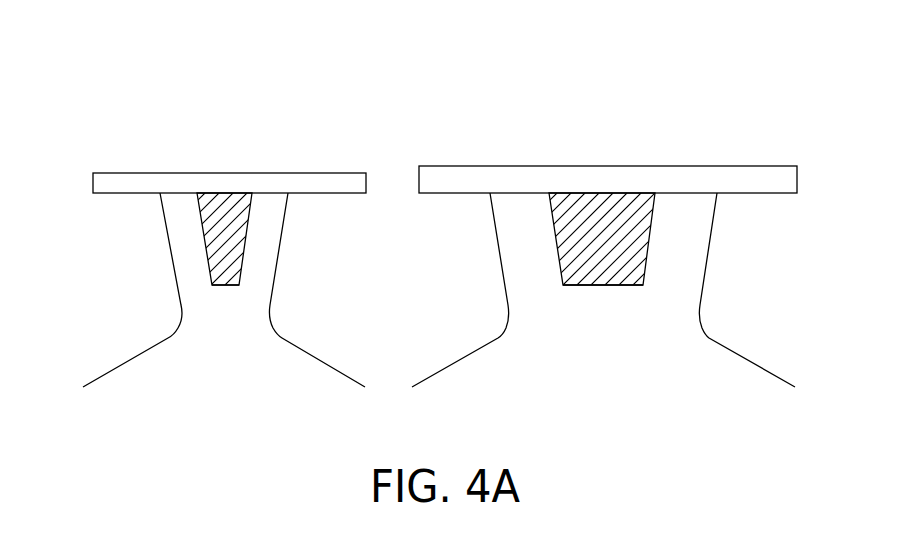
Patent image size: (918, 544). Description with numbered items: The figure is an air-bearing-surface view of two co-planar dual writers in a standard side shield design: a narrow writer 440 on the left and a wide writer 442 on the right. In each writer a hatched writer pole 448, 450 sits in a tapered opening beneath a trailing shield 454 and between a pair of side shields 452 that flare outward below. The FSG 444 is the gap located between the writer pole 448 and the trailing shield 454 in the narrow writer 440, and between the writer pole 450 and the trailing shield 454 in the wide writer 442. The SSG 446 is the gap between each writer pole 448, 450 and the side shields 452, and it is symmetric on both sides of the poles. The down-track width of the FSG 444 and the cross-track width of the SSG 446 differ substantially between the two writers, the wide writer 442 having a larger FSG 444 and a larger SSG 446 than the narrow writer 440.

The narrow writer 440 is at (221, 137).
The wide writer 442 is at (601, 135).
The FSG 444 is at (254, 179).
The SSG 446 is at (177, 237).
The writer pole 448 is at (223, 285).
The writer pole 450 is at (607, 285).
The side shields 452 is at (134, 298).
The trailing shield 454 is at (137, 157).